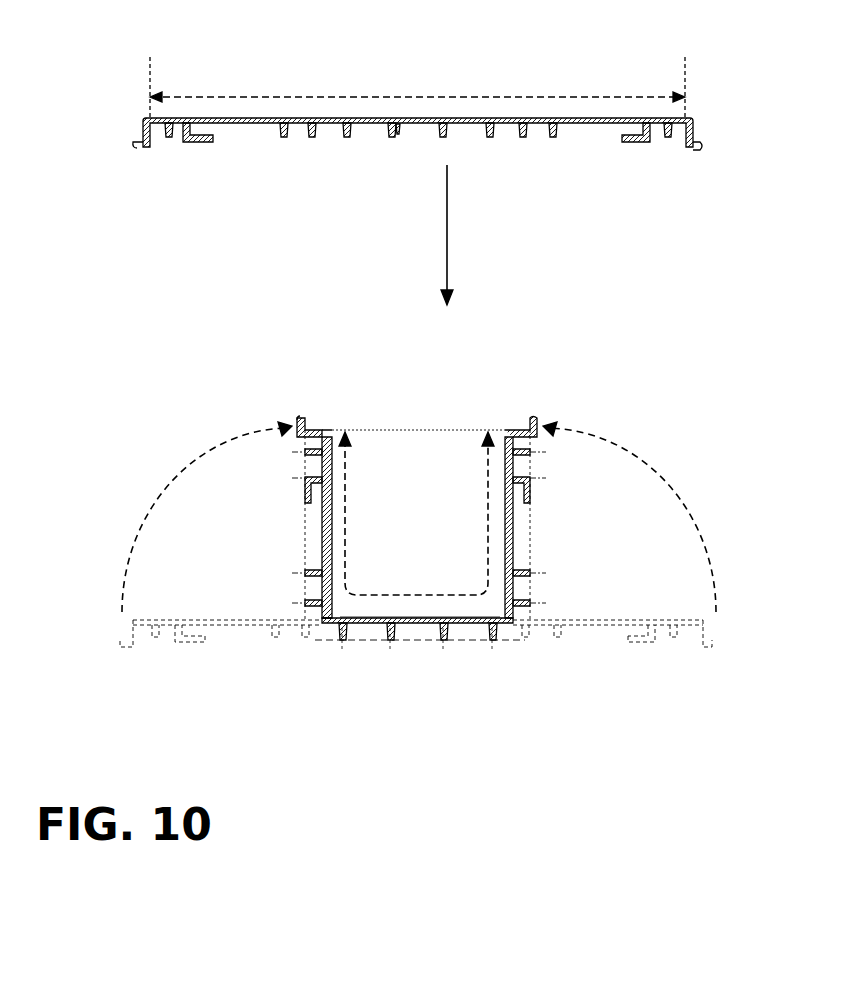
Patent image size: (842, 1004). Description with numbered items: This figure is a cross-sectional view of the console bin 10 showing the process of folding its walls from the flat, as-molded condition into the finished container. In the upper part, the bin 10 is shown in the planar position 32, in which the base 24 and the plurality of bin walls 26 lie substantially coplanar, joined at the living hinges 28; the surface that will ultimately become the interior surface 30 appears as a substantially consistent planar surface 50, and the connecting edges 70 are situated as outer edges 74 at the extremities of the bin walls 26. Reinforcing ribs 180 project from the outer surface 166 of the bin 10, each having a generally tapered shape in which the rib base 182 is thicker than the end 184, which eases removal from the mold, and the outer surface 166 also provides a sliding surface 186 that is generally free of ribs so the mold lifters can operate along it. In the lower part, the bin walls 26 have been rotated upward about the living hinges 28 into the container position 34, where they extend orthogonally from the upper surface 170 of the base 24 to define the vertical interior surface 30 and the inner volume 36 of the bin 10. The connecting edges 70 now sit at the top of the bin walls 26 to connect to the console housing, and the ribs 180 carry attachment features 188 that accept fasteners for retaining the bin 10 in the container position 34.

The bin 10 is at (284, 668).
The base 24 is at (363, 118).
The bin walls 26 is at (610, 118).
The living hinges 28 is at (330, 118).
The interior surface 30 is at (340, 432).
The planar position 32 is at (262, 164).
The container position 34 is at (540, 660).
The inner volume 36 is at (436, 452).
The planar surface 50 is at (268, 118).
The connecting edges 70 is at (697, 143).
The outer edges 74 is at (143, 140).
The outer surface 166 is at (590, 125).
The upper surface 170 is at (470, 118).
The reinforcing ribs 180 is at (392, 133).
The rib base 182 is at (400, 133).
The end 184 is at (493, 130).
The sliding surface 186 is at (232, 140).
The attachment features 188 is at (306, 497).